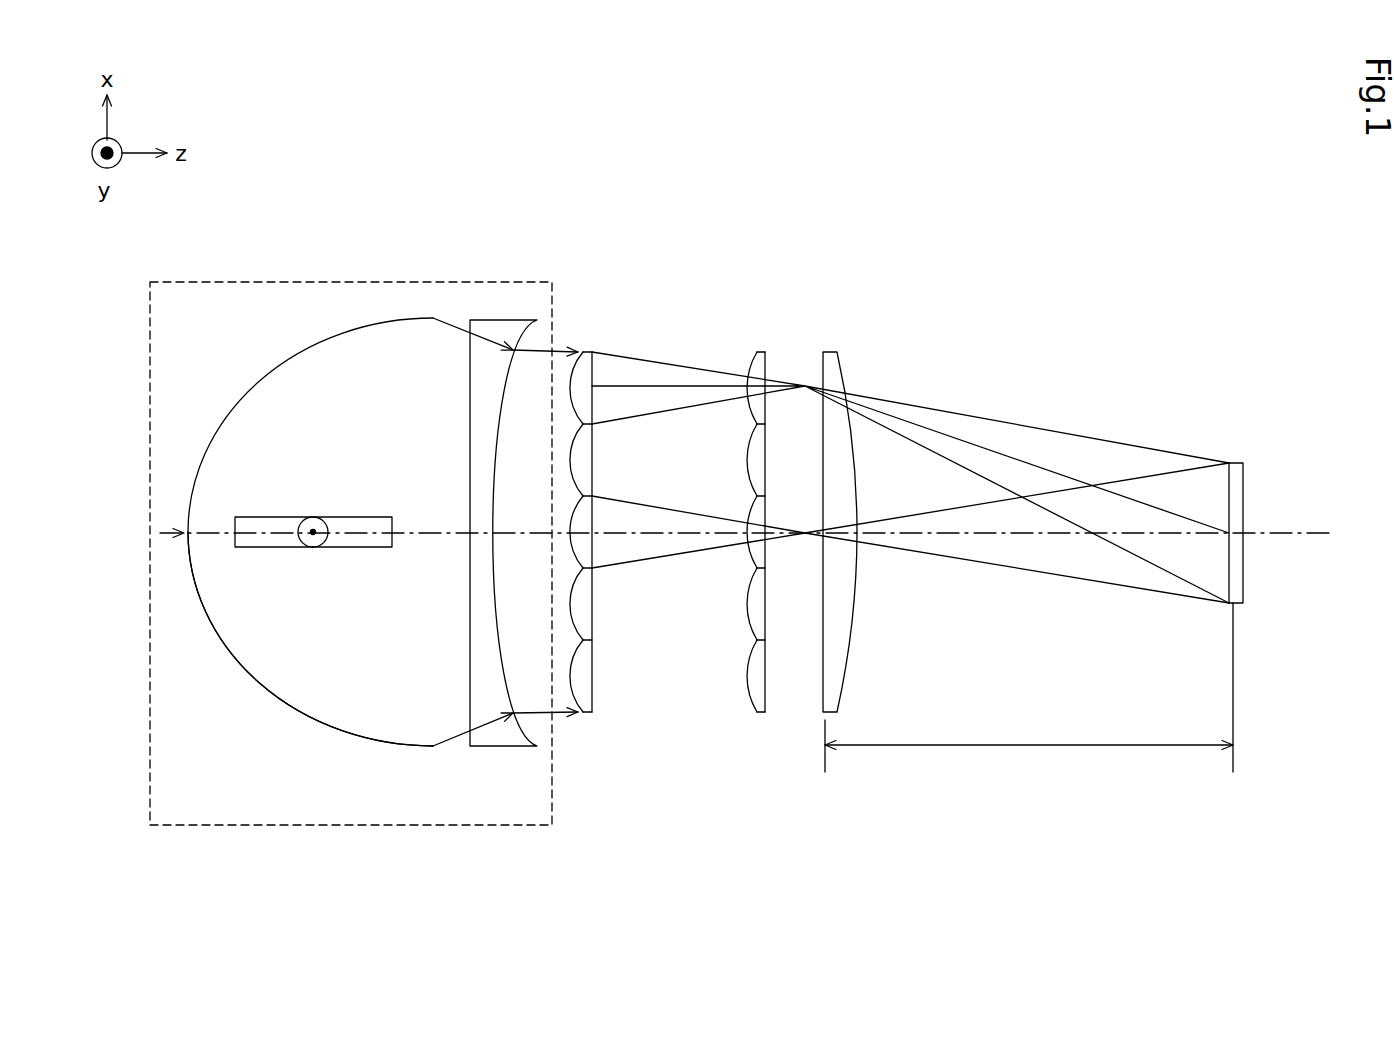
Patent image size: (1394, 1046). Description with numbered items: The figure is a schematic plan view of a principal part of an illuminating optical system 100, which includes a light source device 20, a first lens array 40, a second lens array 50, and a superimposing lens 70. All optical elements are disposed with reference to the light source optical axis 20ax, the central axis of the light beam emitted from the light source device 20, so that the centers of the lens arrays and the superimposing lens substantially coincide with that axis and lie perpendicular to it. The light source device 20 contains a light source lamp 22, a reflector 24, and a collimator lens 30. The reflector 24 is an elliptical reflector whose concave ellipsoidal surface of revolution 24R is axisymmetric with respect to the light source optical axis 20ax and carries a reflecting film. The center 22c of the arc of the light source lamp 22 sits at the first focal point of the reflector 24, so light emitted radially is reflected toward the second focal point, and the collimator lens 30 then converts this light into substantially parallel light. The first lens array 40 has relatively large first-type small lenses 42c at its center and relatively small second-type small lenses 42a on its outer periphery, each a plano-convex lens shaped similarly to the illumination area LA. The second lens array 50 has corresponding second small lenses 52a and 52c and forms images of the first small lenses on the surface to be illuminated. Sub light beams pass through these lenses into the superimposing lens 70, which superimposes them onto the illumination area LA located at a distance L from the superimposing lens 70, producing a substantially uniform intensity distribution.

The illuminating optical system 100 is at (320, 178).
The light source device 20 is at (433, 278).
The light source optical axis 20ax is at (133, 530).
The light source lamp 22 is at (373, 550).
The center of the light source lamp 22c is at (313, 532).
The reflector 24 is at (237, 403).
The ellipsoidal surface of revolution 24R is at (232, 655).
The collimator lens 30 is at (507, 747).
The first lens array 40 is at (614, 493).
The second-type small lenses 42a is at (583, 684).
The first-type small lenses 42c is at (583, 607).
The second lens array 50 is at (724, 493).
The second small lenses 52a is at (753, 684).
The second small lenses 52c is at (753, 608).
The superimposing lens 70 is at (826, 351).
The illumination area LA is at (1237, 462).
The distance between the superimposing lens and the illumination area L is at (1029, 693).